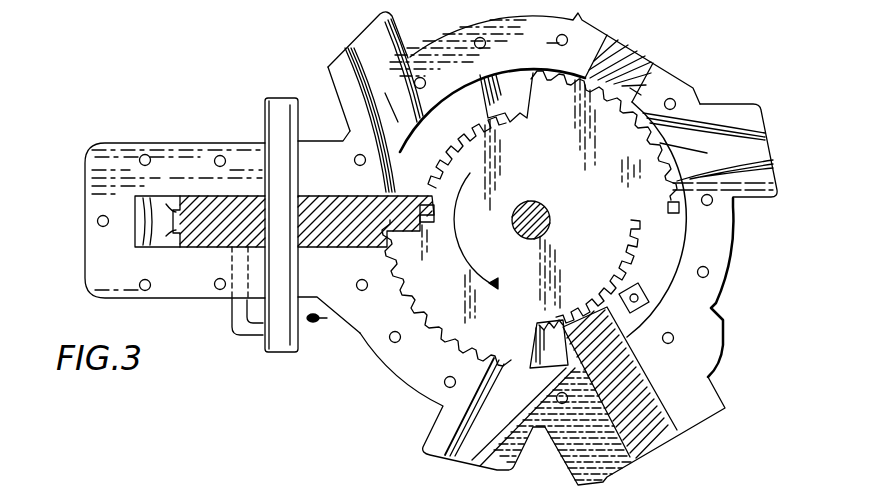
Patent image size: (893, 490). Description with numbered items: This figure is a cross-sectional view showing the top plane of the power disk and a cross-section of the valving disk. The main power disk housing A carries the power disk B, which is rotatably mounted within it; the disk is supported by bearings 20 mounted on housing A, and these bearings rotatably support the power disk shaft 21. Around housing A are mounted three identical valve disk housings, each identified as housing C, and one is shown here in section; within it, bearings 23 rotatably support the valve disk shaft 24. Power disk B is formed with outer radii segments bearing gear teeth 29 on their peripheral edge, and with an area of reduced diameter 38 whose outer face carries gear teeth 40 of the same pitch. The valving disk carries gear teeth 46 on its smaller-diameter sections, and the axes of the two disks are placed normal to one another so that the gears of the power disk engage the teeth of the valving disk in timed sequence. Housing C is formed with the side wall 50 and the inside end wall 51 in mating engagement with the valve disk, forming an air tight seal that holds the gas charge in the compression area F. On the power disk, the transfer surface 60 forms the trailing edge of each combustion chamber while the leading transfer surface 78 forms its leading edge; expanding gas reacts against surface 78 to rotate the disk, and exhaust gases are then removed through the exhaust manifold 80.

The bearings 20 is at (551, 212).
The power disk shaft 21 is at (531, 201).
The bearings 23 is at (265, 148).
The valve disk shaft 24 is at (280, 98).
The gear teeth 29 is at (583, 78).
The area of reduced diameter 38 is at (670, 214).
The gear teeth 40 is at (531, 200).
The gear teeth 46 is at (178, 212).
The side wall 50 is at (200, 196).
The inside end wall 51 is at (140, 232).
The transfer surface 60 is at (522, 105).
The transfer surface 78 is at (417, 230).
The exhaust manifold 80 is at (358, 48).
The main power disk housing A is at (730, 247).
The power disk B is at (566, 143).
The valve disk housing C is at (212, 300).
The compression area F is at (166, 238).